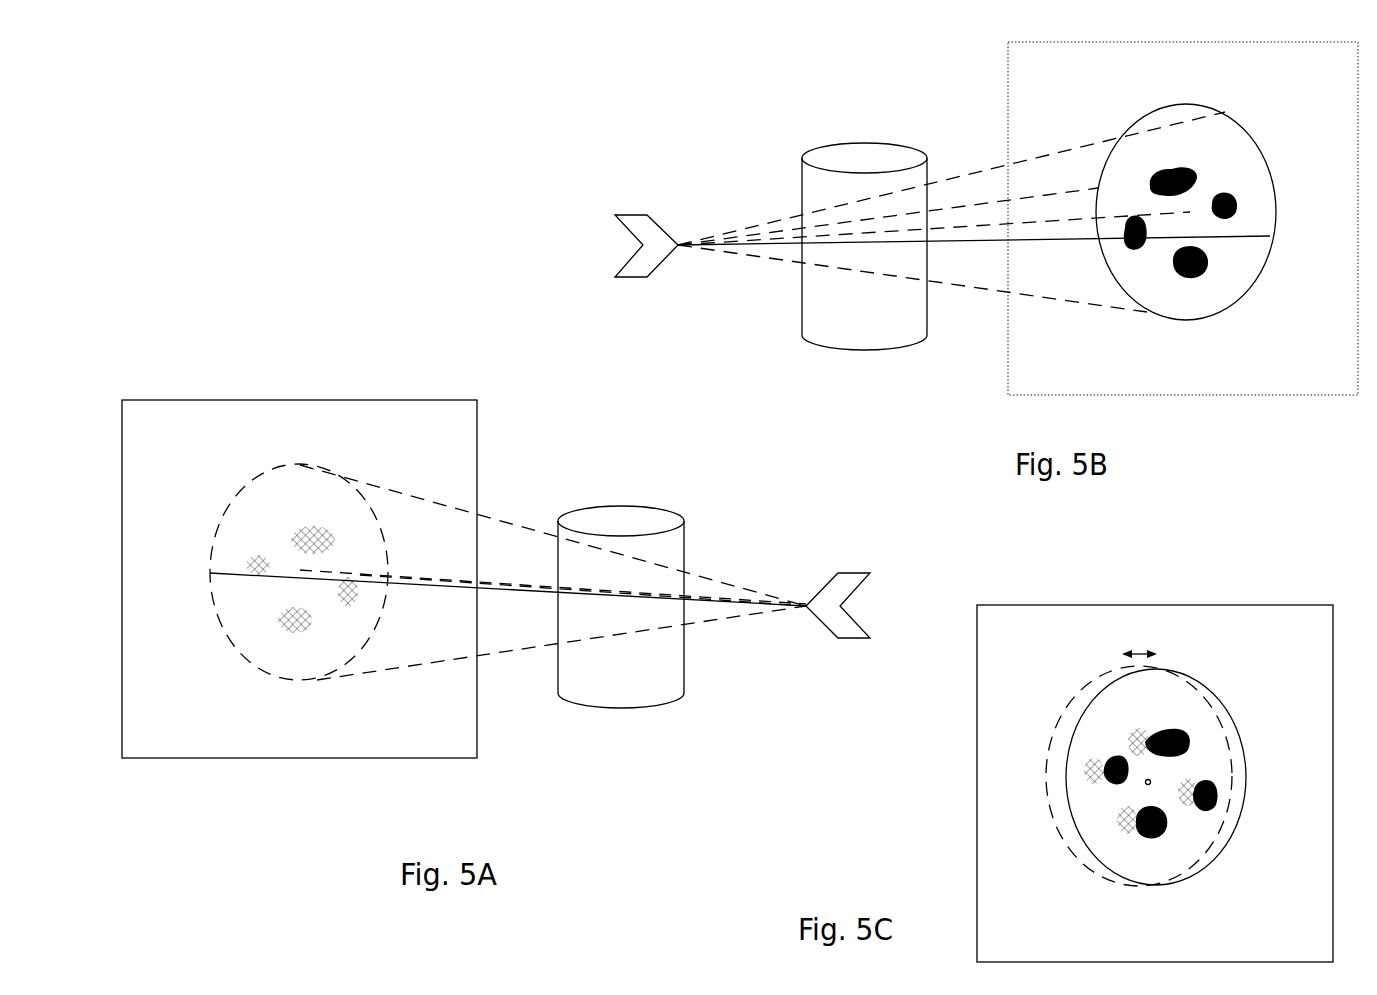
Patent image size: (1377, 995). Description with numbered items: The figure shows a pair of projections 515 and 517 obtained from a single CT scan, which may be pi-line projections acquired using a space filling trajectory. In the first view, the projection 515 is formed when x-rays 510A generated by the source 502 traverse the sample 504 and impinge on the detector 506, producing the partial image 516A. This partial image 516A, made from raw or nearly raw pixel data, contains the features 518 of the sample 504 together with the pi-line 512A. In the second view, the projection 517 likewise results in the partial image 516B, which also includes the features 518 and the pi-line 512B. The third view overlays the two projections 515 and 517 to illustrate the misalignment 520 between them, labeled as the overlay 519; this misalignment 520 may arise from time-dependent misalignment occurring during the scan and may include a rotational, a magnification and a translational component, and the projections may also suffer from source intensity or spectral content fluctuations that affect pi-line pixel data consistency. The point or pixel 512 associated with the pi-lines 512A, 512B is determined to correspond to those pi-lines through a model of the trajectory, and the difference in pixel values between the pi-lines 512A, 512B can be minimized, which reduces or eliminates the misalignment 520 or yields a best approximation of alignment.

In FIG. 5A, the source 502 is at (855, 572).
In FIG. 5A, the sample 504 is at (642, 707).
In FIG. 5A, the detector 506 is at (300, 759).
In FIG. 5A, the x-rays 510A is at (742, 628).
In FIG. 5C, the point or pixel 512 is at (1128, 782).
In FIG. 5A, the pi-line 512A is at (365, 565).
In FIG. 5B, the pi-line 512B is at (1051, 198).
In FIG. 5A, the projection 515 is at (564, 418).
In FIG. 5A, the partial image 516A is at (267, 470).
In FIG. 5C, the partial image 516A is at (1091, 675).
In FIG. 5B, the partial image 516B is at (1200, 318).
In FIG. 5C, the partial image 516B is at (1226, 713).
In FIG. 5B, the projection 517 is at (889, 92).
In FIG. 5A, the features 518 is at (318, 515).
In FIG. 5B, the features 518 is at (1165, 155).
In FIG. 5C, the features 518 is at (1210, 745).
In FIG. 5C, the overlay comparison 519 is at (922, 822).
In FIG. 5C, the misalignment 520 is at (1139, 644).